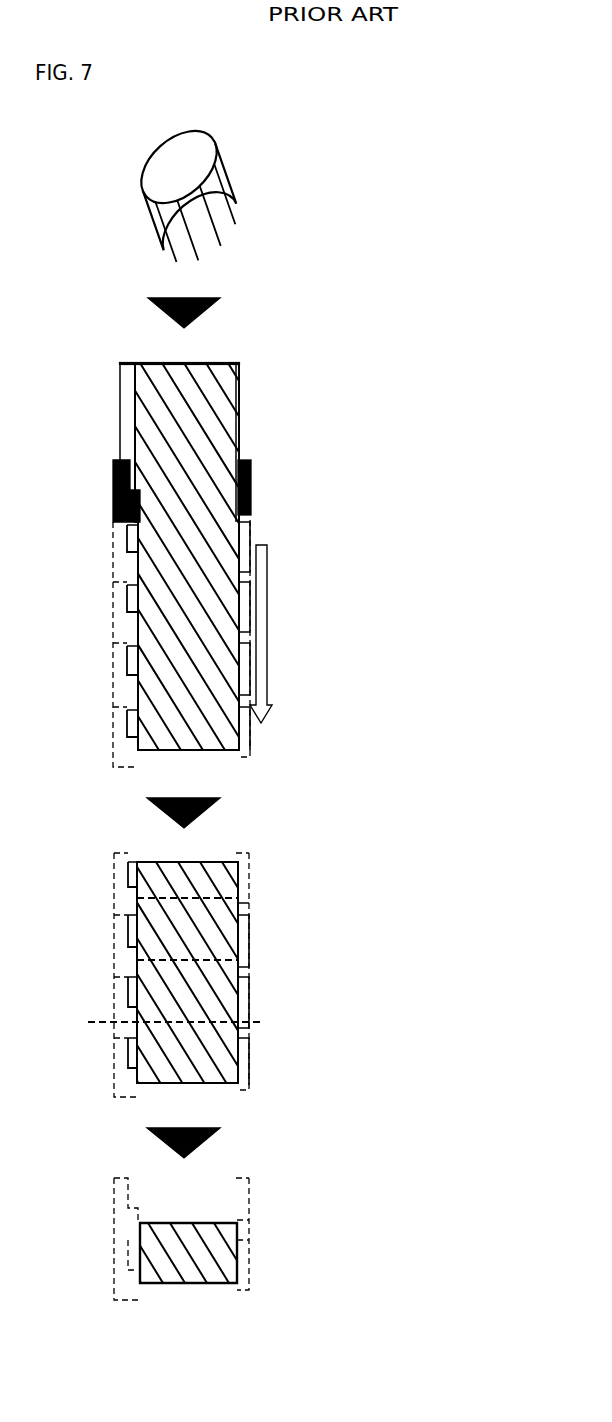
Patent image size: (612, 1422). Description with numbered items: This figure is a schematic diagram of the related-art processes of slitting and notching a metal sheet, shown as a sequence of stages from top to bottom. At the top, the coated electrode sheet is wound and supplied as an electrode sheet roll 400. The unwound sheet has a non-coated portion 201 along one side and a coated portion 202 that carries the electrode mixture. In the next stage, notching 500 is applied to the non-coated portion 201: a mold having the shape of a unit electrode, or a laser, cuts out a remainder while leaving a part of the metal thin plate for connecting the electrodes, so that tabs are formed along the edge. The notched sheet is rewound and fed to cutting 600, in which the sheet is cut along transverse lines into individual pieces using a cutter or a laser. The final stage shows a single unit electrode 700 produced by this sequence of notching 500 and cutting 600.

The electrode sheet roll 400 is at (152, 178).
The non-coated portion 201 is at (120, 398).
The coated portion 202 is at (239, 400).
The notching 500 is at (114, 500).
The cutting 600 is at (114, 1022).
The unit electrode 700 is at (140, 1226).